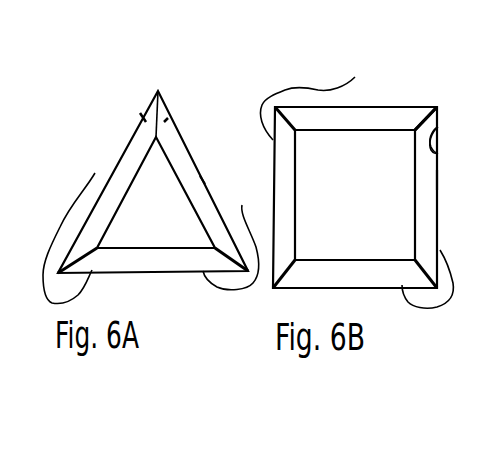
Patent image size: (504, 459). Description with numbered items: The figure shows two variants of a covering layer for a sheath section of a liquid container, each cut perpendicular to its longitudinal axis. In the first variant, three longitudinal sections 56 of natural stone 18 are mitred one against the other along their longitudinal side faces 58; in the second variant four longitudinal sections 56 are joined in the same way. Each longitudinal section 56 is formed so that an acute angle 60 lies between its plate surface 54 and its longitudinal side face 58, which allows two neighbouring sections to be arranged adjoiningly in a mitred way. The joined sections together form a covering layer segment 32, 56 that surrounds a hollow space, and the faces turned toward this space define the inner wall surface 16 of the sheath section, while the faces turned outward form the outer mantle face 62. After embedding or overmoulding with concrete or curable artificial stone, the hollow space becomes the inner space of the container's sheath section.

In FIG. 6A, the inner wall surface 16 is at (182, 191).
In FIG. 6B, the inner wall surface 16 is at (357, 131).
In FIG. 6A, the natural stone 18 is at (108, 271).
In FIG. 6B, the natural stone 18 is at (337, 127).
In FIG. 6A, the covering layer segment 32 is at (102, 190).
In FIG. 6B, the covering layer segment 32 is at (357, 106).
In FIG. 6B, the plate surface 54 is at (440, 137).
In FIG. 6A, the longitudinal section 56 is at (203, 180).
In FIG. 6B, the longitudinal section 56 is at (437, 178).
In FIG. 6A, the longitudinal side face 58 is at (157, 121).
In FIG. 6B, the longitudinal side face 58 is at (418, 121).
In FIG. 6A, the acute angle 60 is at (157, 121).
In FIG. 6B, the acute angle 60 is at (438, 153).
In FIG. 6A, the outer mantle face 62 is at (222, 213).
In FIG. 6B, the outer mantle face 62 is at (438, 252).